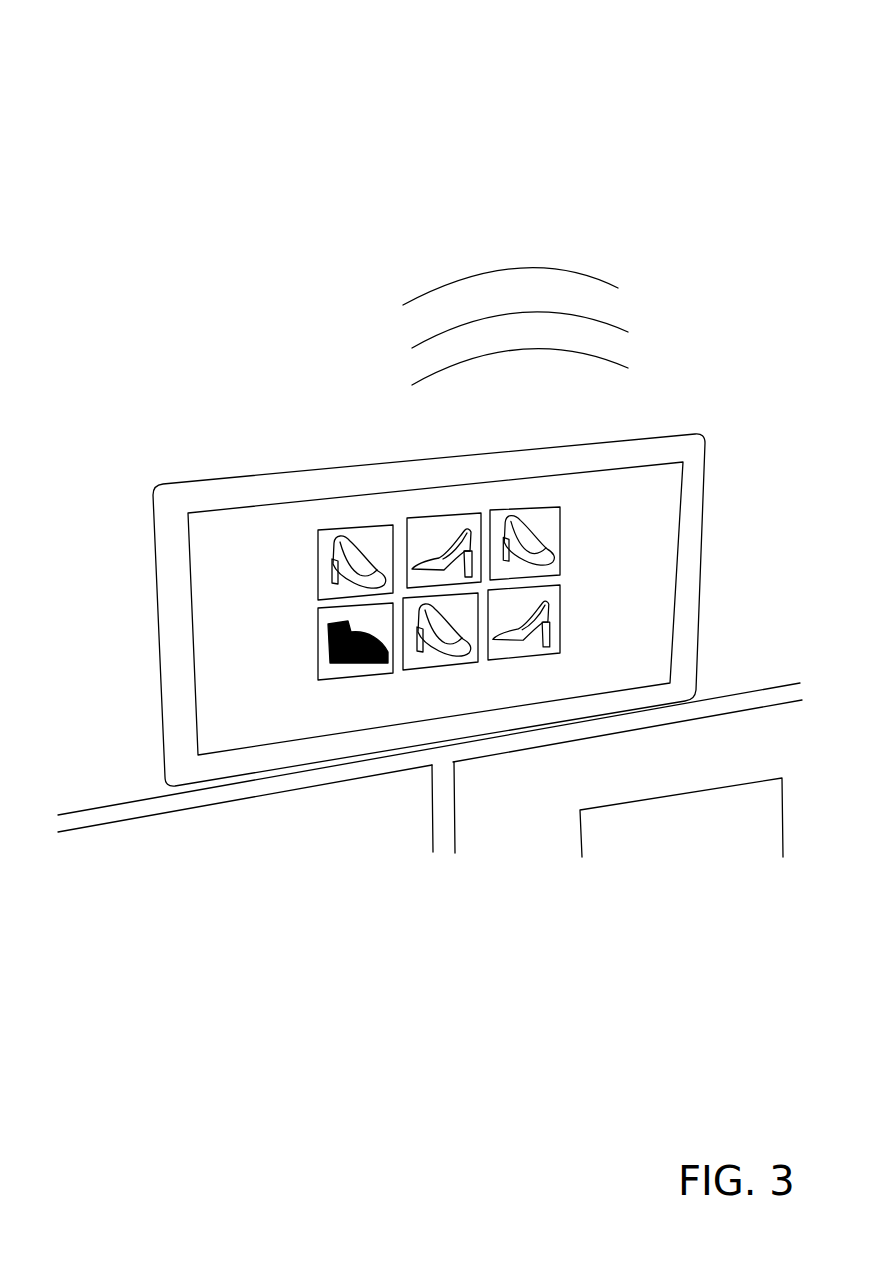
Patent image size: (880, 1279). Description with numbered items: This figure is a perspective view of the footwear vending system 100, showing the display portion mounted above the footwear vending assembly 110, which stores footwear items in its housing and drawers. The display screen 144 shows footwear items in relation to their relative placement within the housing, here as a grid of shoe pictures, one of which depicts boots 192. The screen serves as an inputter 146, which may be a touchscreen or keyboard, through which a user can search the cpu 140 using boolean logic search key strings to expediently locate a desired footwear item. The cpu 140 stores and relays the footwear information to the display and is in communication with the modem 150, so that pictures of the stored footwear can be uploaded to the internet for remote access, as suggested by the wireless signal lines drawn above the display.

The footwear vending system 100 is at (702, 118).
The footwear vending assembly 110 is at (720, 707).
The cpu 140 is at (653, 648).
The display screen 144 is at (653, 493).
The inputter 146 is at (370, 535).
The modem 150 is at (653, 582).
The boots 192 is at (337, 660).